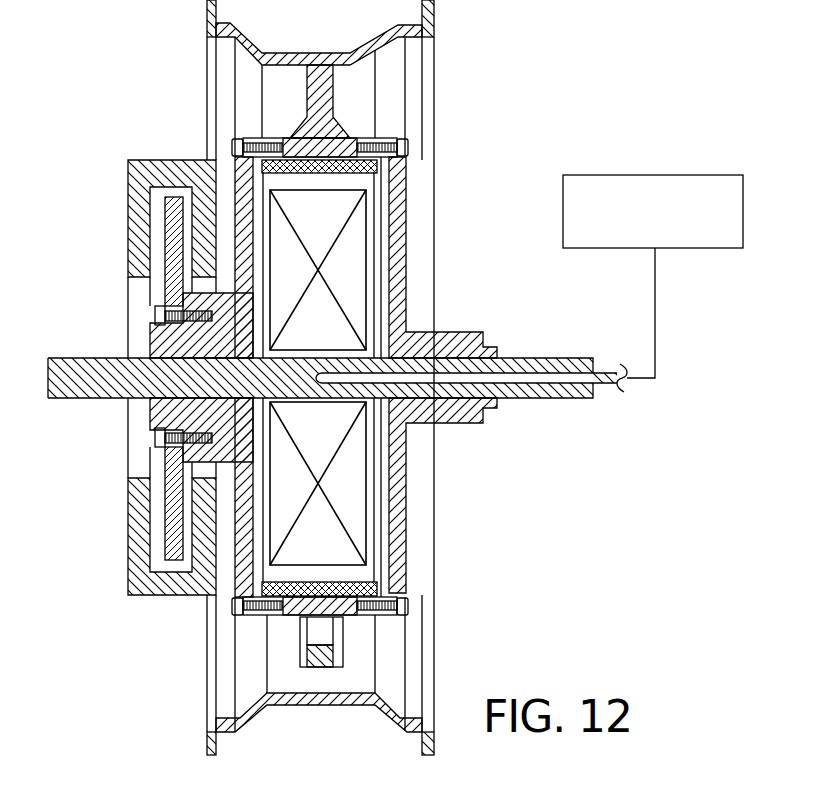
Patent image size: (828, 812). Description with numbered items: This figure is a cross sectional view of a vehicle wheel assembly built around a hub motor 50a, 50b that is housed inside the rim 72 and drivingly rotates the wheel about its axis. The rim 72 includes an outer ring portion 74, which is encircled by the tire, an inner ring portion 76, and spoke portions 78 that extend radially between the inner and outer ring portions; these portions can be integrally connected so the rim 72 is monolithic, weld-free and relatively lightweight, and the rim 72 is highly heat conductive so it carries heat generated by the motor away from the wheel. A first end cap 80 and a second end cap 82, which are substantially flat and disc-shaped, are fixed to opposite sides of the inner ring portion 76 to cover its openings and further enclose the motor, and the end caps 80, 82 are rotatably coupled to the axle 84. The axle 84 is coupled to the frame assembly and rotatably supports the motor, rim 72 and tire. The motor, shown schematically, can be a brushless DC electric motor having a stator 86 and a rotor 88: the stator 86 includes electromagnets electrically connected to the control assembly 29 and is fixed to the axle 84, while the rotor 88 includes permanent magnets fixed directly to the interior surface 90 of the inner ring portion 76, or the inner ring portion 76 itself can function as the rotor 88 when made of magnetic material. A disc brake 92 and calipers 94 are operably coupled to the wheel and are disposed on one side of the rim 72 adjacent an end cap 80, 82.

The control assembly 29 is at (657, 164).
The hub motor 50a is at (89, 72).
The hub motor 50b is at (428, 377).
The rim 72 is at (343, 714).
The outer ring portion 74 is at (283, 51).
The inner ring portion 76 is at (343, 146).
The spoke portions 78 is at (328, 100).
The first end cap 80 is at (246, 232).
The second end cap 82 is at (398, 268).
The axle 84 is at (87, 400).
The stator 86 is at (328, 473).
The rotor 88 is at (372, 580).
The interior surface 90 is at (376, 552).
The disc brake 92 is at (172, 528).
The calipers 94 is at (160, 590).